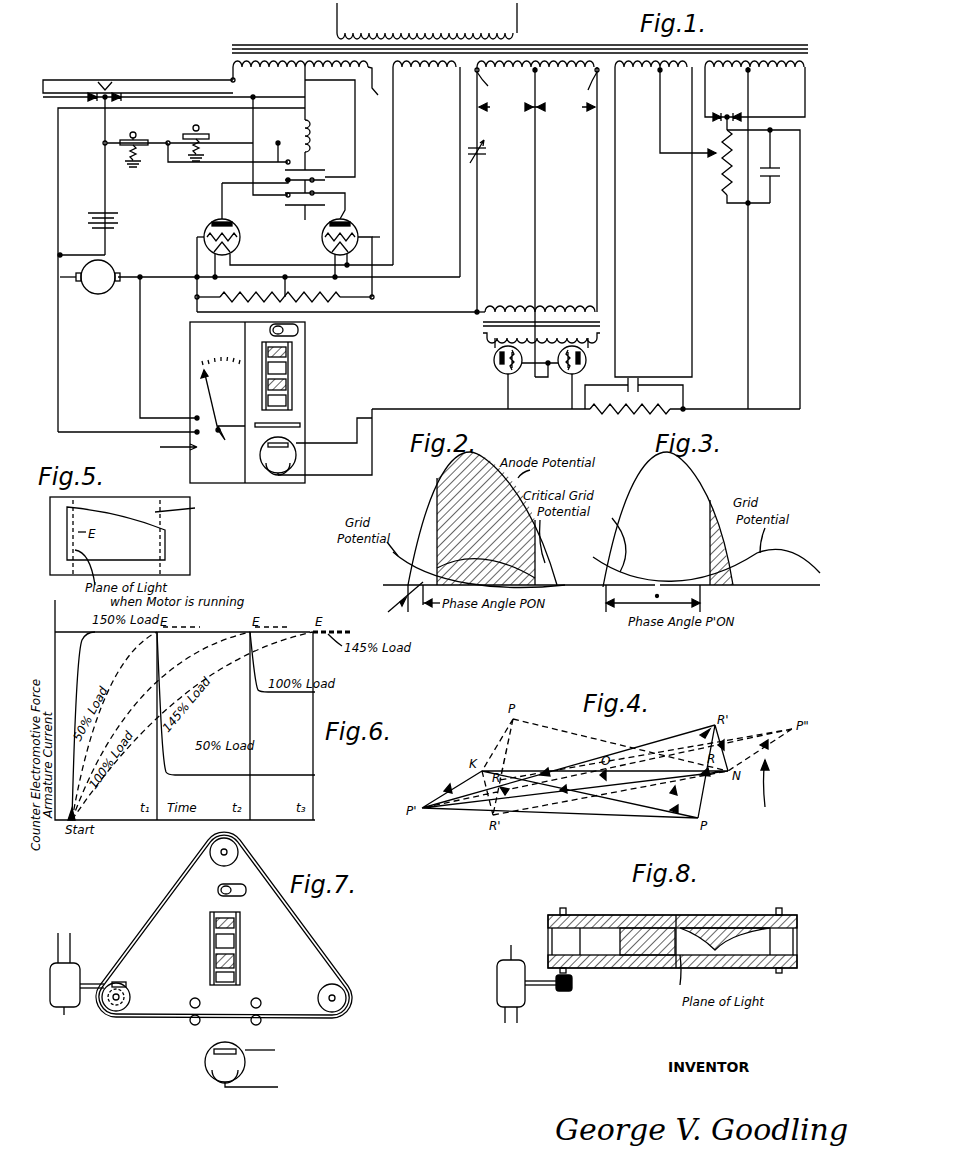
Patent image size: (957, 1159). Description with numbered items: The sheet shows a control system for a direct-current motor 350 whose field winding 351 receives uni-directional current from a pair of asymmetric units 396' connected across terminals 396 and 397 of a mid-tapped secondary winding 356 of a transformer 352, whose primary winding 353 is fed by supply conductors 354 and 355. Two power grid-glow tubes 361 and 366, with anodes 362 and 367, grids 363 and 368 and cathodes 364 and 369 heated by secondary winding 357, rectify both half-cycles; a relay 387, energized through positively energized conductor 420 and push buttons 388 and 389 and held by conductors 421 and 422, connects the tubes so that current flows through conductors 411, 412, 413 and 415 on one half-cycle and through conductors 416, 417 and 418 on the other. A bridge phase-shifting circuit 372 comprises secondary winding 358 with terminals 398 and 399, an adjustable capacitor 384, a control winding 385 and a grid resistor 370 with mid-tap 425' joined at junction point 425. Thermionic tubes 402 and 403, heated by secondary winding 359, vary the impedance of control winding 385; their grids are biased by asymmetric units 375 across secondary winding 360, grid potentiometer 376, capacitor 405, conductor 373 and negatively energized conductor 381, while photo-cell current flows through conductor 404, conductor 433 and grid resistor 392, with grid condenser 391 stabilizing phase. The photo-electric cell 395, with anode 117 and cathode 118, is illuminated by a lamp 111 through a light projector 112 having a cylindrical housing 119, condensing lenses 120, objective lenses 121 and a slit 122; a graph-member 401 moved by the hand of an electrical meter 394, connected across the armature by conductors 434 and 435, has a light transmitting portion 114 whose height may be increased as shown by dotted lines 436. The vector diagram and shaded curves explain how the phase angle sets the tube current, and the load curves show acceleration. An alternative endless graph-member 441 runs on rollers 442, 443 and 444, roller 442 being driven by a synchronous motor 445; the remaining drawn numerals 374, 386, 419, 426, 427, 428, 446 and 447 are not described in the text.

In FIG. 1, the motor 350 is at (90, 277).
In FIG. 1, the field winding 351 is at (113, 240).
In FIG. 1, the transformer 352 is at (520, 32).
In FIG. 1, the primary winding 353 is at (425, 24).
In FIG. 1, the supply conductor 354 is at (337, 18).
In FIG. 1, the supply conductor 355 is at (517, 18).
In FIG. 1, the secondary winding 356 is at (300, 75).
In FIG. 1, the secondary winding 357 is at (426, 169).
In FIG. 1, the secondary winding 358 is at (537, 186).
In FIG. 1, the secondary winding 359 is at (653, 219).
In FIG. 1, the secondary winding 360 is at (755, 89).
In FIG. 1, the power grid-glow tube 361 is at (237, 236).
In FIG. 1, the anode 362 is at (212, 224).
In FIG. 1, the grid 363 is at (200, 237).
In FIG. 1, the cathode 364 is at (303, 259).
In FIG. 1, the power grid-glow tube 366 is at (325, 236).
In FIG. 1, the anode 367 is at (345, 222).
In FIG. 1, the grid 368 is at (365, 236).
In FIG. 1, the cathode 369 is at (320, 259).
In FIG. 1, the grid resistor 370 is at (284, 291).
In FIG. 1, the bridge phase-shifting circuit 372 is at (560, 155).
In FIG. 1, the conductor 373 is at (686, 153).
In FIG. 1, the conductor 374 is at (378, 420).
In FIG. 7, the conductor 374 is at (268, 1038).
In FIG. 1, the asymmetric units 375 is at (727, 113).
In FIG. 1, the grid potentiometer 376 is at (722, 170).
In FIG. 1, the negatively energized conductor 381 is at (748, 228).
In FIG. 1, the adjustable capacitor 384 is at (486, 154).
In FIG. 1, the control winding 385 is at (538, 305).
In FIG. 1, the transformer winding 386 is at (483, 335).
In FIG. 1, the relay 387 is at (323, 118).
In FIG. 1, the push button 388 is at (138, 140).
In FIG. 1, the push button 389 is at (205, 136).
In FIG. 1, the grid condenser 391 is at (640, 388).
In FIG. 1, the grid resistor 392 is at (600, 414).
In FIG. 1, the electrical meter 394 is at (264, 402).
In FIG. 1, the photo-electric cell 395 is at (292, 445).
In FIG. 7, the photo-electric cell 395 is at (205, 1070).
In FIG. 1, the terminal 396 is at (212, 67).
In FIG. 1, the asymmetric units 396' is at (174, 76).
In FIG. 1, the terminal 397 is at (383, 90).
In FIG. 1, the terminal 398 is at (494, 81).
In FIG. 1, the terminal 399 is at (592, 87).
In FIG. 1, the graph-member 401 is at (293, 420).
In FIG. 5, the graph-member 401 is at (190, 556).
In FIG. 1, the thermionic tube 402 is at (496, 373).
In FIG. 1, the thermionic tube 403 is at (567, 373).
In FIG. 1, the conductor 404 is at (800, 270).
In FIG. 1, the capacitor 405 is at (778, 153).
In FIG. 1, the conductor 411 is at (355, 160).
In FIG. 1, the conductor 412 is at (222, 183).
In FIG. 1, the conductor 413 is at (162, 282).
In FIG. 1, the conductor 415 is at (75, 115).
In FIG. 1, the conductor 416 is at (345, 95).
In FIG. 1, the conductor 417 is at (255, 138).
In FIG. 1, the conductor 418 is at (345, 210).
In FIG. 1, the bus conductor 419 is at (145, 80).
In FIG. 1, the positively energized conductor 420 is at (107, 140).
In FIG. 1, the conductor 421 is at (229, 154).
In FIG. 1, the conductor 422 is at (325, 160).
In FIG. 1, the junction point 425 is at (355, 292).
In FIG. 1, the mid-tap 425' is at (262, 287).
In FIG. 1, the conductor 426 is at (372, 250).
In FIG. 1, the conductor 427 is at (197, 257).
In FIG. 1, the conductor 428 is at (543, 245).
In FIG. 1, the conductor 433 is at (385, 409).
In FIG. 7, the conductor 433 is at (263, 1087).
In FIG. 1, the conductor 434 is at (140, 368).
In FIG. 1, the conductor 435 is at (58, 368).
In FIG. 5, the dotted lines 436 is at (152, 510).
In FIG. 7, the endless graph-member 441 is at (315, 957).
In FIG. 8, the endless graph-member 441 is at (655, 915).
In FIG. 7, the roller 442 is at (128, 992).
In FIG. 8, the roller 442 is at (572, 912).
In FIG. 7, the roller 443 is at (238, 848).
In FIG. 7, the roller 444 is at (343, 985).
In FIG. 8, the roller 444 is at (806, 898).
In FIG. 7, the synchronous motor 445 is at (74, 983).
In FIG. 8, the synchronous motor 445 is at (532, 977).
In FIG. 8, the window 446 is at (610, 950).
In FIG. 8, the window 447 is at (750, 950).
In FIG. 1, the lamp 111 is at (298, 326).
In FIG. 1, the light projector 112 is at (290, 362).
In FIG. 5, the light transmitting portion 114 is at (120, 536).
In FIG. 1, the anode 117 is at (290, 462).
In FIG. 1, the cathode 118 is at (300, 483).
In FIG. 1, the cylindrical housing 119 is at (292, 372).
In FIG. 1, the condensing lenses 120 is at (288, 345).
In FIG. 1, the objective lenses 121 is at (285, 392).
In FIG. 1, the slit 122 is at (280, 378).